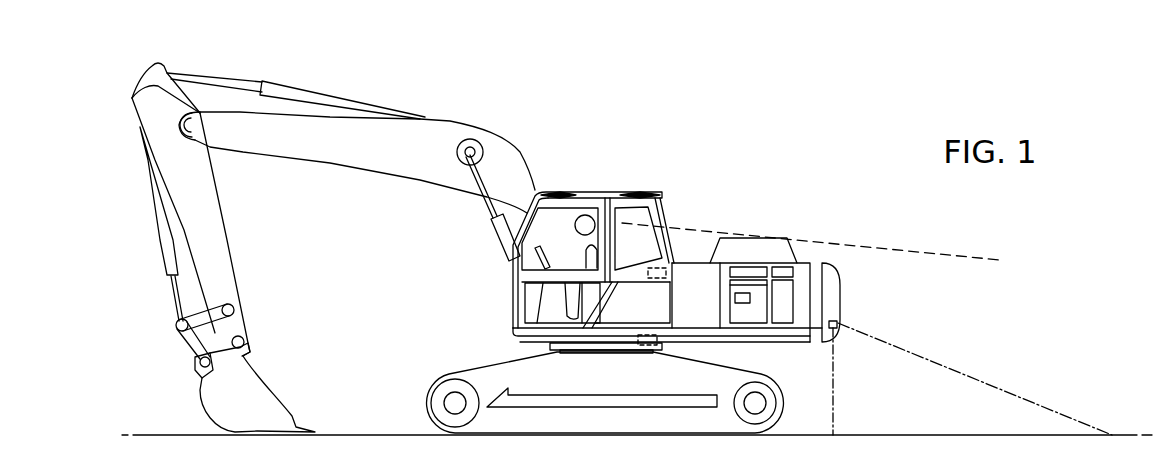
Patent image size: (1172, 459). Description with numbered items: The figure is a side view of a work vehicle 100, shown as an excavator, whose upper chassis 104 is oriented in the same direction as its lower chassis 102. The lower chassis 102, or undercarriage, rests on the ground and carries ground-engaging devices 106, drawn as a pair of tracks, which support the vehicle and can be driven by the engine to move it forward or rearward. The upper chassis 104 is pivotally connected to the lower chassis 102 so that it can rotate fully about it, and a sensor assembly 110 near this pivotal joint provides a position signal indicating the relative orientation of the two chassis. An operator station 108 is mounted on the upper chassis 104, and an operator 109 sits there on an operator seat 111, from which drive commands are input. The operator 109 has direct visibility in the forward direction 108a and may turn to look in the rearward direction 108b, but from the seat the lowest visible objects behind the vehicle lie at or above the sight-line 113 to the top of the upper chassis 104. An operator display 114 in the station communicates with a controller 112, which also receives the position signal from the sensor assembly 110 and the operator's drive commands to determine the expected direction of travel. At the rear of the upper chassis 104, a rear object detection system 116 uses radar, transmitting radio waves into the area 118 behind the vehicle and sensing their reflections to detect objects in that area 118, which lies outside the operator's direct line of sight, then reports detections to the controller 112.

The work vehicle 100 is at (742, 206).
The lower chassis 102 is at (414, 375).
The upper chassis 104 is at (492, 280).
The ground-engaging devices 106 is at (493, 360).
The operator station 108 is at (603, 190).
The forward direction 108a is at (562, 190).
The rearward direction 108b is at (631, 192).
The operator 109 is at (585, 214).
The sensor assembly 110 is at (641, 349).
The operator seat 111 is at (590, 290).
The controller 112 is at (666, 273).
The sight-line 113 is at (962, 250).
The operator display 114 is at (518, 260).
The rear object detection system (RODS) 116 is at (839, 322).
The area 118 is at (963, 398).